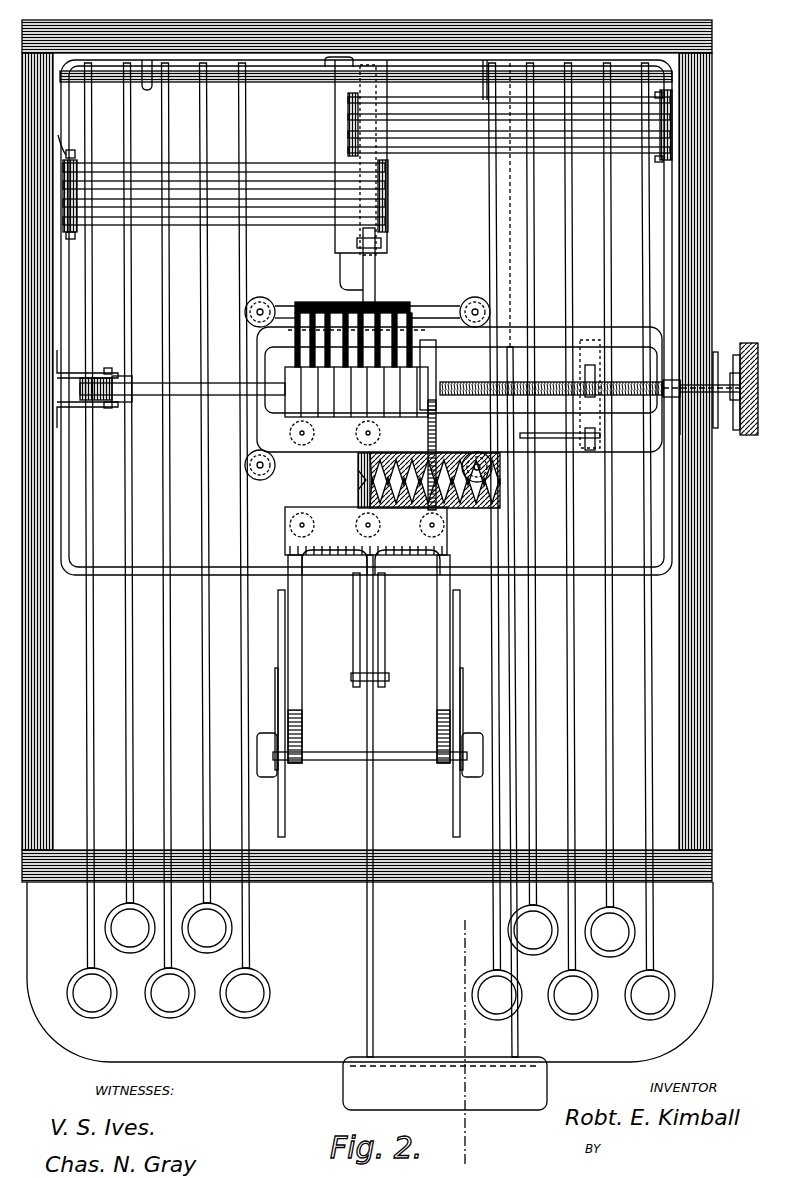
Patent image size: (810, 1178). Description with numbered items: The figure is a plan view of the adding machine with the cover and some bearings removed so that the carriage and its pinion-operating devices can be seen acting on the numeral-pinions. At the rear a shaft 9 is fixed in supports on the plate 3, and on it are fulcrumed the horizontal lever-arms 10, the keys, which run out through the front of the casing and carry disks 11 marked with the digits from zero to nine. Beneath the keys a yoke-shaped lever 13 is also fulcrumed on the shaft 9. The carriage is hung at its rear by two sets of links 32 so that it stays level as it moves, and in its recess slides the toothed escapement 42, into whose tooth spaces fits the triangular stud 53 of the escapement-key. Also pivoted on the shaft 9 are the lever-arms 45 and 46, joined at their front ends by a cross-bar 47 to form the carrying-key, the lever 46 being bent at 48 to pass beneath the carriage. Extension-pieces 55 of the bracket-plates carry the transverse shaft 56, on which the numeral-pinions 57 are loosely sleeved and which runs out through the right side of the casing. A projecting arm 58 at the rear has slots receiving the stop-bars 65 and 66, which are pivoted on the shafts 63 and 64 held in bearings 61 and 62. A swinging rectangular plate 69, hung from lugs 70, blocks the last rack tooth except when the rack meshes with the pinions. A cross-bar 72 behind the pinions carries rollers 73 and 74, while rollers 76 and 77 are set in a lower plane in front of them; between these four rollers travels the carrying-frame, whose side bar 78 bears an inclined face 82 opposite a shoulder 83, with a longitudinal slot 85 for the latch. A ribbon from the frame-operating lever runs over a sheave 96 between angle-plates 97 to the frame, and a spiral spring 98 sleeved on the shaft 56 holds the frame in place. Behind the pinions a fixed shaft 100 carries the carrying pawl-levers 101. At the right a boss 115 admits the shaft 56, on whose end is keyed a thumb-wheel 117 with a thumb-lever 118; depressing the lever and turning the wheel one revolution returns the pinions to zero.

The plate 3 is at (345, 20).
The shaft 9 is at (287, 80).
The lever-arms 10 is at (240, 118).
The disks 11 is at (135, 910).
The yoke-shaped lever 13 is at (366, 317).
The links 32 is at (287, 808).
The escapement 42 is at (357, 473).
The lever-arm 45 is at (519, 1036).
The lever-arm 46 is at (366, 1020).
The cross-bar 47 is at (497, 1112).
The bend 48 is at (360, 267).
The stud 53 is at (358, 488).
The extension-pieces 55 is at (258, 362).
The transverse shaft 56 is at (672, 410).
The numeral-pinions 57 is at (355, 410).
The projecting arm 58 is at (356, 155).
The bearing 61 is at (675, 110).
The bearing 62 is at (62, 153).
The shaft 63 is at (665, 146).
The shaft 64 is at (76, 252).
The stop-bars 65 is at (414, 100).
The stop-bars 66 is at (252, 165).
The rectangular plate 69 is at (366, 531).
The lugs 70 is at (398, 556).
The cross-bar 72 is at (418, 305).
The roller 73 is at (256, 298).
The roller 74 is at (470, 298).
The roller 76 is at (478, 452).
The roller 77 is at (260, 454).
The side bar 78 is at (459, 389).
The inclined face 82 is at (437, 350).
The shoulder 83 is at (438, 425).
The longitudinal slot 85 is at (542, 442).
The sheave 96 is at (124, 402).
The angle-plates 97 is at (98, 368).
The spiral spring 98 is at (452, 382).
The transverse shaft 100 is at (280, 348).
The carrying pawl-levers 101 is at (418, 348).
The boss 115 is at (717, 350).
The thumb-wheel 117 is at (759, 356).
The thumb-lever 118 is at (729, 397).